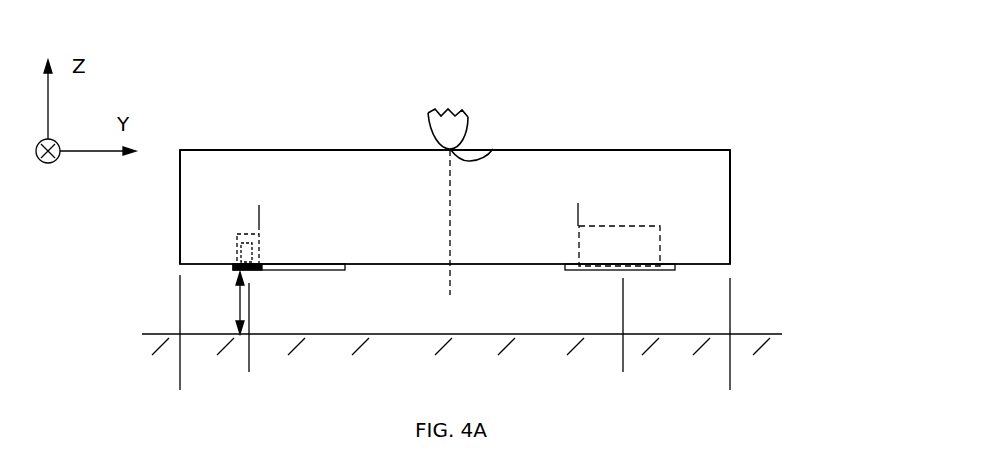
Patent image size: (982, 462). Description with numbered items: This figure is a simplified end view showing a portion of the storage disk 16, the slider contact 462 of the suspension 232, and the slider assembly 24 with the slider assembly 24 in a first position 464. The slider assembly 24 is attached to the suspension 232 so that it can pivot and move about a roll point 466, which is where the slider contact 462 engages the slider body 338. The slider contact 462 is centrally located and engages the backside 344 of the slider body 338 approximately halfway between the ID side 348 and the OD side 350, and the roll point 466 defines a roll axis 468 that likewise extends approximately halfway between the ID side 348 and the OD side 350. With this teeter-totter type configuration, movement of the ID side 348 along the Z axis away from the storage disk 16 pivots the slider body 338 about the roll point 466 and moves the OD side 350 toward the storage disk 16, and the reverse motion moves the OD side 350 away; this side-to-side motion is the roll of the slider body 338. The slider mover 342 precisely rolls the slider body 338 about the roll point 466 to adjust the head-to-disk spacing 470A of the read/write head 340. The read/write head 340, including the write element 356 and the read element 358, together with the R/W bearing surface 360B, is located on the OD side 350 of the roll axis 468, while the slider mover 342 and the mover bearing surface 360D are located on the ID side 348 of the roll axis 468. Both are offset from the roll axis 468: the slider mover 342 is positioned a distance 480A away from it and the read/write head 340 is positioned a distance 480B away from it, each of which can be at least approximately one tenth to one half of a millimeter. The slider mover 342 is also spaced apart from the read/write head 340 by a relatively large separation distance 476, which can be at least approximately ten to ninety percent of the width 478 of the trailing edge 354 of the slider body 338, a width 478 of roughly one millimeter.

The slider assembly 24 is at (629, 129).
The backside 344 is at (220, 150).
The OD side 350 is at (180, 188).
The ID side 348 is at (730, 199).
The trailing edge 354 is at (673, 160).
The slider body 338 is at (703, 167).
The first position 464 is at (770, 177).
The suspension 232 is at (416, 117).
The slider contact 462 is at (468, 117).
The roll point 466 is at (493, 149).
The roll axis 468 is at (447, 177).
The distance 480B is at (438, 211).
The distance 480A is at (566, 211).
The read/write head 340 is at (108, 222).
The read element 358 is at (240, 237).
The write element 356 is at (240, 253).
The slider mover 342 is at (648, 240).
The R/W bearing surface 360B is at (235, 287).
The mover bearing surface 360D is at (675, 265).
The head-to-disk spacing 470A is at (240, 318).
The storage disk 16 is at (748, 340).
The separation distance 476 is at (612, 368).
The width 478 is at (719, 385).